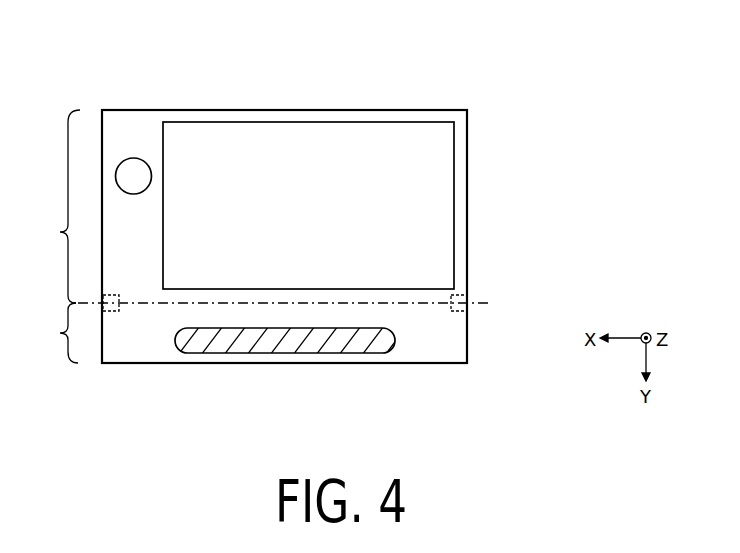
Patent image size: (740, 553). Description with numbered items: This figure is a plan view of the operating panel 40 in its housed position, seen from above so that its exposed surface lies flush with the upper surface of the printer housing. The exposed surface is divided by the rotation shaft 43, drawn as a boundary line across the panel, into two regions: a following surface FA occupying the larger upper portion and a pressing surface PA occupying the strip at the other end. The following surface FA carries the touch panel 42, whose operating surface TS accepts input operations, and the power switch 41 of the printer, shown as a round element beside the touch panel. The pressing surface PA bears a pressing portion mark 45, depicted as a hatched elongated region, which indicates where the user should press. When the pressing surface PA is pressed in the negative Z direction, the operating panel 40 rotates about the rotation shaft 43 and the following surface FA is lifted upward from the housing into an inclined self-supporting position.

The operating panel 40 is at (85, 75).
The power switch 41 is at (125, 172).
The touch panel 42 is at (443, 218).
The operating surface TS is at (440, 162).
The rotation shaft 43 is at (500, 304).
The pressing portion mark 45 is at (288, 343).
The following surface FA is at (49, 206).
The pressing surface PA is at (48, 333).